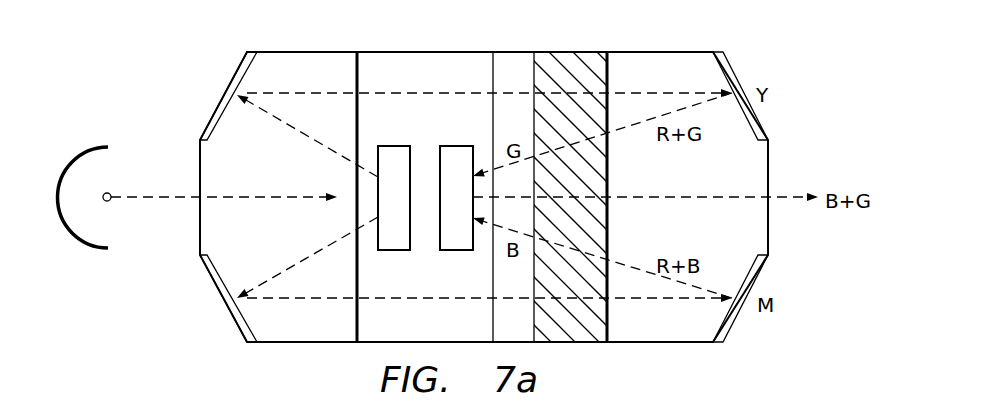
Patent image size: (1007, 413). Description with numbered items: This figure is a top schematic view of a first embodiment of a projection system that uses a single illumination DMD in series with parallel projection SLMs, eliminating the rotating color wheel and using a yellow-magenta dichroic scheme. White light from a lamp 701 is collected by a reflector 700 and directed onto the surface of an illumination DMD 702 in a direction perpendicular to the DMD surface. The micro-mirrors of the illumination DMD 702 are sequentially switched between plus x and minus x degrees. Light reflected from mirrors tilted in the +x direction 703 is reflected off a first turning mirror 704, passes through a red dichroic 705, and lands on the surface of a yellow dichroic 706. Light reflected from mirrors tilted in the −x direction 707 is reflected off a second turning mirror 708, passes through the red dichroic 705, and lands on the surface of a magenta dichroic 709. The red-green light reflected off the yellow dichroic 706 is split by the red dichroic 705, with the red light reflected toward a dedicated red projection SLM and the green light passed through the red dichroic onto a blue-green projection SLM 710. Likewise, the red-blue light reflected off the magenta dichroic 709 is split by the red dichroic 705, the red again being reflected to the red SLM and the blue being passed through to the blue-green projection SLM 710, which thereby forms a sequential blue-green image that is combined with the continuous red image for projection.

The reflector 700 is at (84, 150).
The lamp 701 is at (110, 203).
The illumination DMD 702 is at (390, 251).
The +x direction 703 is at (290, 125).
The first turning mirror 704 is at (240, 73).
The red dichroic 705 is at (609, 226).
The yellow dichroic 706 is at (735, 60).
The −x direction 707 is at (288, 268).
The second turning mirror 708 is at (240, 322).
The magenta dichroic 709 is at (735, 325).
The blue-green projection SLM 710 is at (457, 146).